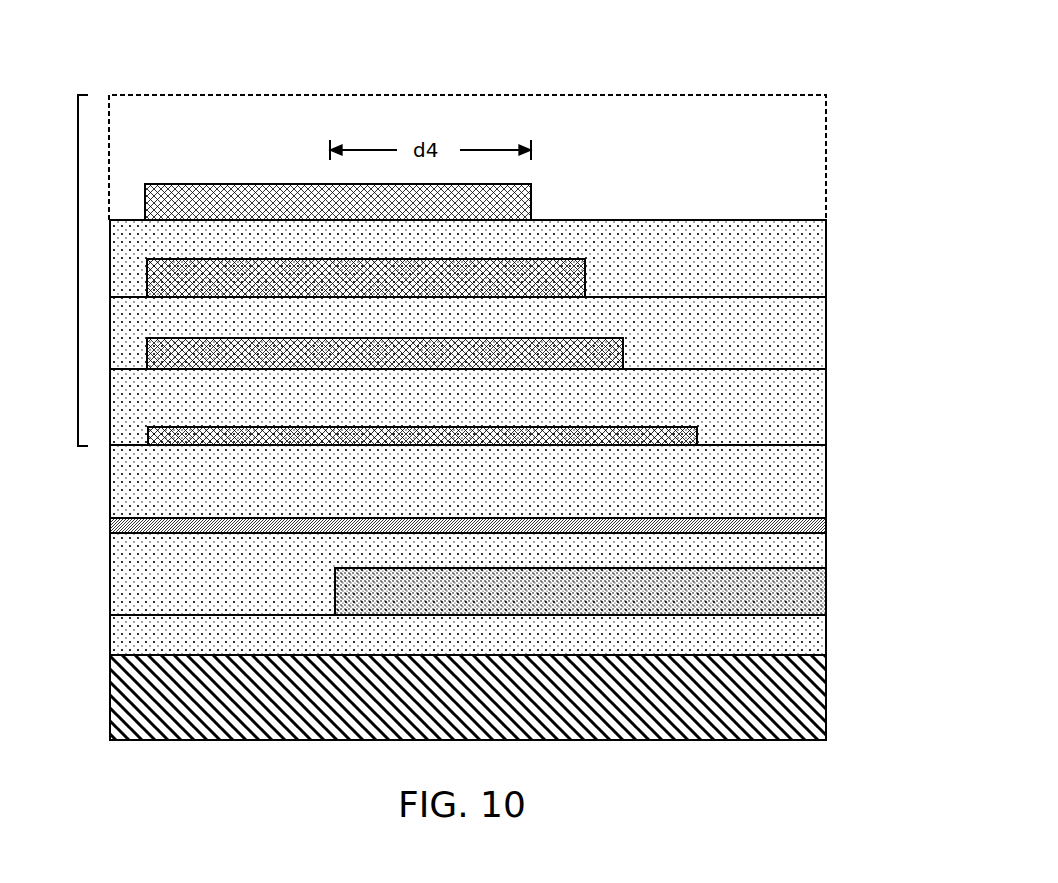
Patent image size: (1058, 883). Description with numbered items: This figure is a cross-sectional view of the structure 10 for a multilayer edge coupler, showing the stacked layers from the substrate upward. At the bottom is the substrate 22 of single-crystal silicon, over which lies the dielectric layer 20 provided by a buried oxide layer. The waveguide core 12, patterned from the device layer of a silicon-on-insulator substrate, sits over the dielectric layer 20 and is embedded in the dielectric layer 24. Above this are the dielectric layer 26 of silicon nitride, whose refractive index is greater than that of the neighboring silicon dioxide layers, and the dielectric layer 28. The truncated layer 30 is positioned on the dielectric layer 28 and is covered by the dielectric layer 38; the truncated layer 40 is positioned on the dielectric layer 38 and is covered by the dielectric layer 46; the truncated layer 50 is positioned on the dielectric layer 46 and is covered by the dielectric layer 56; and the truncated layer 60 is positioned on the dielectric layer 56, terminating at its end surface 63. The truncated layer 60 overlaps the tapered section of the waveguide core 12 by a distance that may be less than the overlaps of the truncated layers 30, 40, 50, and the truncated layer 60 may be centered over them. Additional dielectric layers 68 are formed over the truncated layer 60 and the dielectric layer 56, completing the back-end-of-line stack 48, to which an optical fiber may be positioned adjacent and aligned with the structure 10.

The structure 10 is at (137, 62).
The waveguide core 12 is at (792, 581).
The dielectric layer 20 is at (788, 639).
The substrate 22 is at (793, 703).
The dielectric layer 24 is at (155, 588).
The dielectric layer 26 is at (787, 526).
The dielectric layer 28 is at (793, 488).
The truncated layer 30 is at (668, 430).
The dielectric layer 38 is at (805, 395).
The truncated layer 40 is at (600, 352).
The dielectric layer 46 is at (792, 320).
The back-end-of-line stack 48 is at (78, 270).
The truncated layer 50 is at (533, 286).
The dielectric layer 56 is at (797, 245).
The truncated layer 60 is at (260, 202).
The end surface 63 is at (533, 205).
The additional dielectric layers 68 is at (803, 157).